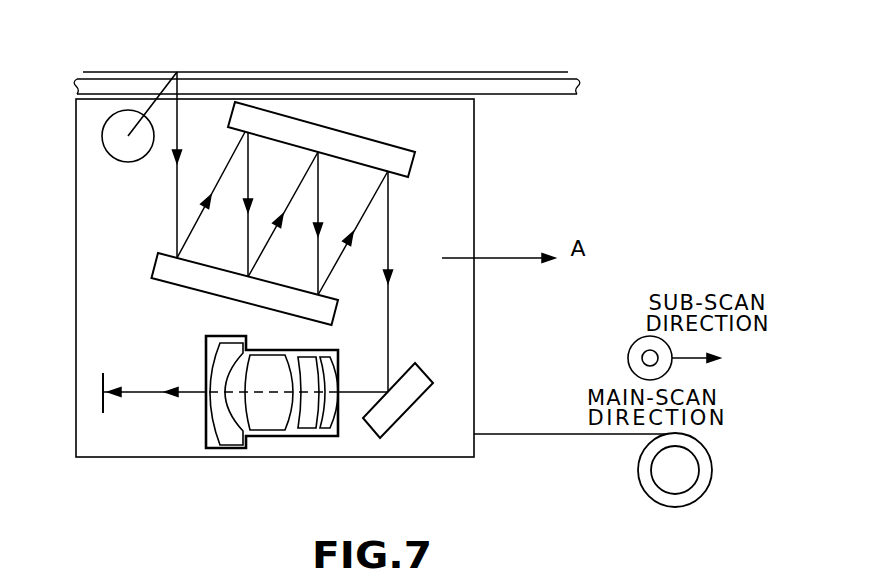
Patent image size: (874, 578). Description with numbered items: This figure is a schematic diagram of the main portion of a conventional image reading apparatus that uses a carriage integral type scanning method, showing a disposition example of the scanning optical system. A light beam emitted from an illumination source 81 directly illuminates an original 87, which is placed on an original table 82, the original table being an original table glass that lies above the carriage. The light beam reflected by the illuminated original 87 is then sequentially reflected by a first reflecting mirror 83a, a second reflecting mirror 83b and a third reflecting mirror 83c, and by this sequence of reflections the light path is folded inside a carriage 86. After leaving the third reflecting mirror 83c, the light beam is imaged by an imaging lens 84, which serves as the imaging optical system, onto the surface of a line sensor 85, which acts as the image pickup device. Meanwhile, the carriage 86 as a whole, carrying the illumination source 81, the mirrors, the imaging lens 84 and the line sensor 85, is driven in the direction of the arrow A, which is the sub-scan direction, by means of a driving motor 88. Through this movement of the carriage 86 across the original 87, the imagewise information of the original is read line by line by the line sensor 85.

The illumination source 81 is at (102, 145).
The original table 82 is at (515, 85).
The first reflecting mirror 83a is at (167, 273).
The second reflecting mirror 83b is at (395, 155).
The third reflecting mirror 83c is at (410, 377).
The imaging lens 84 is at (292, 437).
The line sensor 85 is at (103, 413).
The carriage 86 is at (476, 318).
The original 87 is at (120, 72).
The driving motor 88 is at (645, 485).